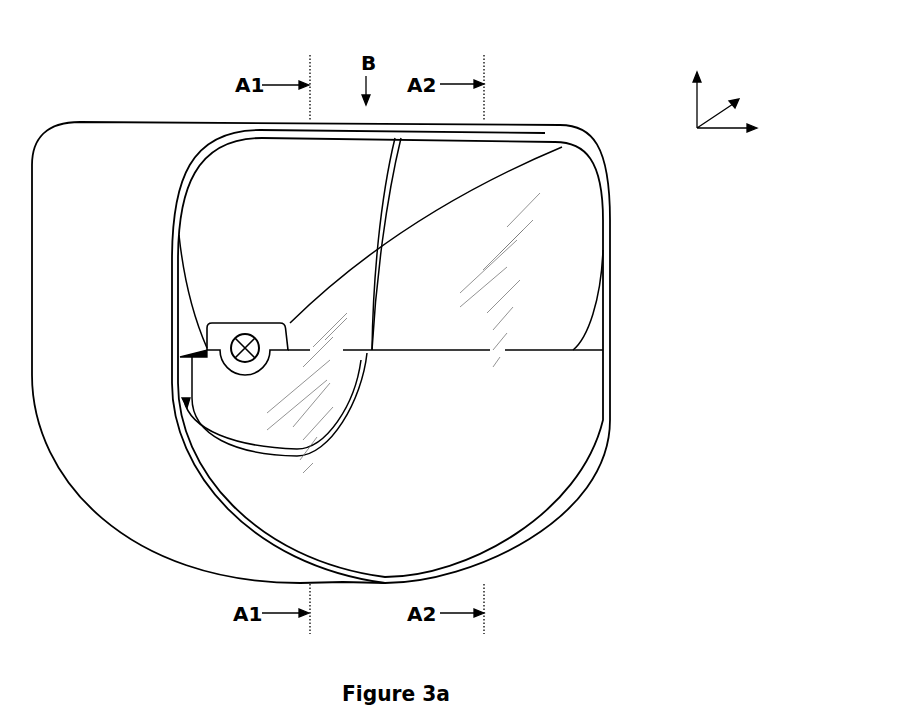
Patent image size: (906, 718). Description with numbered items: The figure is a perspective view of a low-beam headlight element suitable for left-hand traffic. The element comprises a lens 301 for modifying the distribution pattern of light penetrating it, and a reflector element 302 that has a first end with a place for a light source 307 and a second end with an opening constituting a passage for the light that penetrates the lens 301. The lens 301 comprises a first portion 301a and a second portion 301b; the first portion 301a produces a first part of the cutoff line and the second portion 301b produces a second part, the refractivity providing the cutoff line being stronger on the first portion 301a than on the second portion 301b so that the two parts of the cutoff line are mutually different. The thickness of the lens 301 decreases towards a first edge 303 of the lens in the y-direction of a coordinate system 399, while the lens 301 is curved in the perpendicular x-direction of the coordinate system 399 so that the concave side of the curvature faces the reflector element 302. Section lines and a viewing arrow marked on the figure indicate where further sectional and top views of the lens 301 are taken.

The reflector element 302 is at (100, 140).
The lens 301 is at (517, 505).
The first edge 303 is at (516, 137).
The first portion 301a is at (298, 208).
The second portion 301b is at (471, 264).
The light source 307 is at (248, 325).
The coordinate system 399 is at (773, 80).